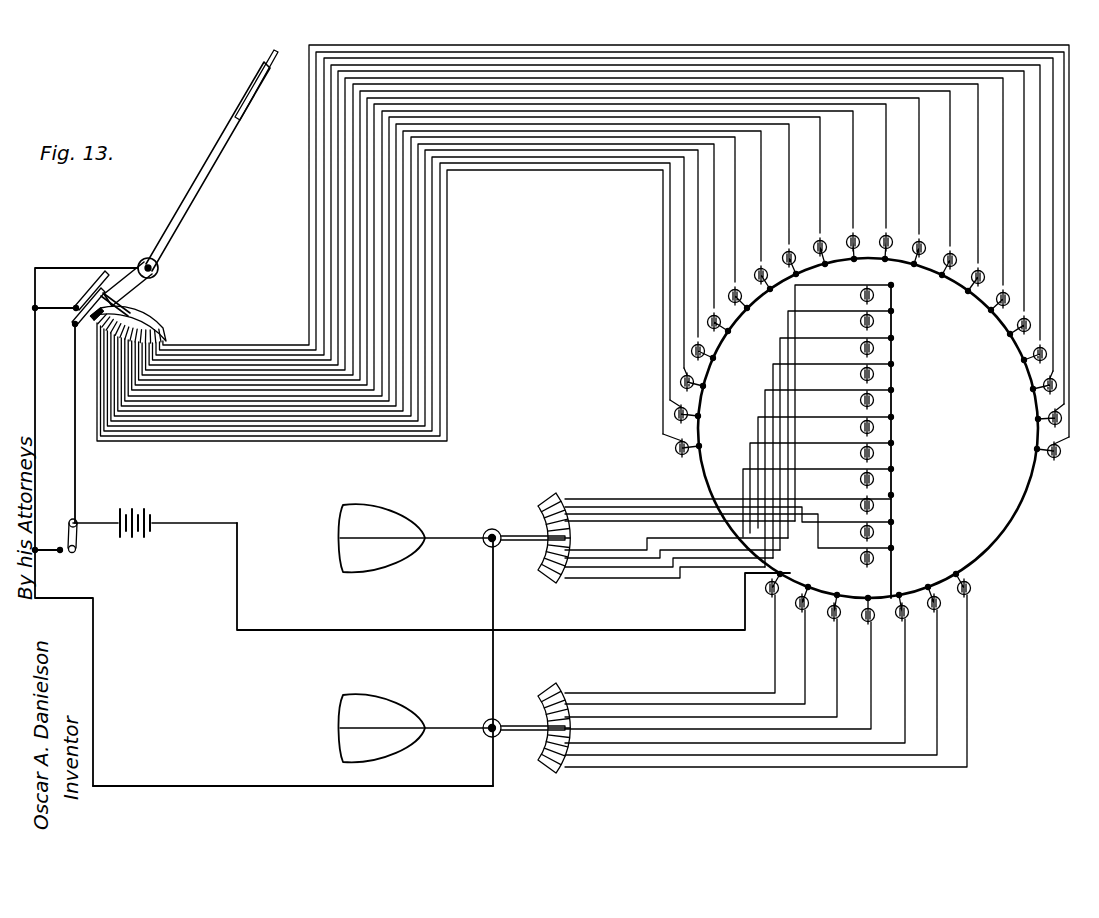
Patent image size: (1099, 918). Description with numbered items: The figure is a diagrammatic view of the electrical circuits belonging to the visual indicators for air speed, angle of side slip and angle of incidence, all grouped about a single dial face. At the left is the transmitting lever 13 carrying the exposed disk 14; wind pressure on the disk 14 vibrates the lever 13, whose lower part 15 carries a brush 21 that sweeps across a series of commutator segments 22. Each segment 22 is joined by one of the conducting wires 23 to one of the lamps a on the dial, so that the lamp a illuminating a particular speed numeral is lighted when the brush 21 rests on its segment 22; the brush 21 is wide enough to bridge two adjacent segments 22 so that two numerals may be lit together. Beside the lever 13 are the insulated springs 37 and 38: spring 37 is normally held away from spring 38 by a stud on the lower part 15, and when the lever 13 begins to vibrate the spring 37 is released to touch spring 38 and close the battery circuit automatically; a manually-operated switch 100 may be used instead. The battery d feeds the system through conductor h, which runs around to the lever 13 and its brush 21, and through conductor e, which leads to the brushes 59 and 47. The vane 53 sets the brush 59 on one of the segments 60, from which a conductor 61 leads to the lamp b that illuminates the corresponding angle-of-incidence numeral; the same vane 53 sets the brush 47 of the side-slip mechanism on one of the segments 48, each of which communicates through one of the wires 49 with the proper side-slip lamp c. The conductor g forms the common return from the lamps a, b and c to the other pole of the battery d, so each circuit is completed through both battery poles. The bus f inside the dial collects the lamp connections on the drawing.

The transmitting lever 13 is at (198, 196).
The exposed disk 14 is at (248, 108).
The lower part of the transmitting lever 15 is at (162, 276).
The brush 21 is at (140, 312).
The commutator segments 22 is at (168, 336).
The conducting wires 23 is at (450, 360).
The insulated spring 37 is at (95, 270).
The insulated spring 38 is at (70, 330).
The brush 47 is at (528, 710).
The segments 48 is at (560, 692).
The wires 49 is at (632, 693).
The vane 53 is at (415, 708).
The brush 59 is at (527, 520).
The segment 60 is at (556, 494).
The conductor 61 is at (728, 431).
The manually-operated switch 100 is at (93, 544).
The lamps a is at (1045, 385).
The lamps b is at (875, 453).
The lamps c is at (840, 595).
The battery d is at (150, 515).
The conductor e is at (210, 786).
The bus wire f is at (885, 490).
The conductor g is at (605, 576).
The conductor h is at (75, 527).